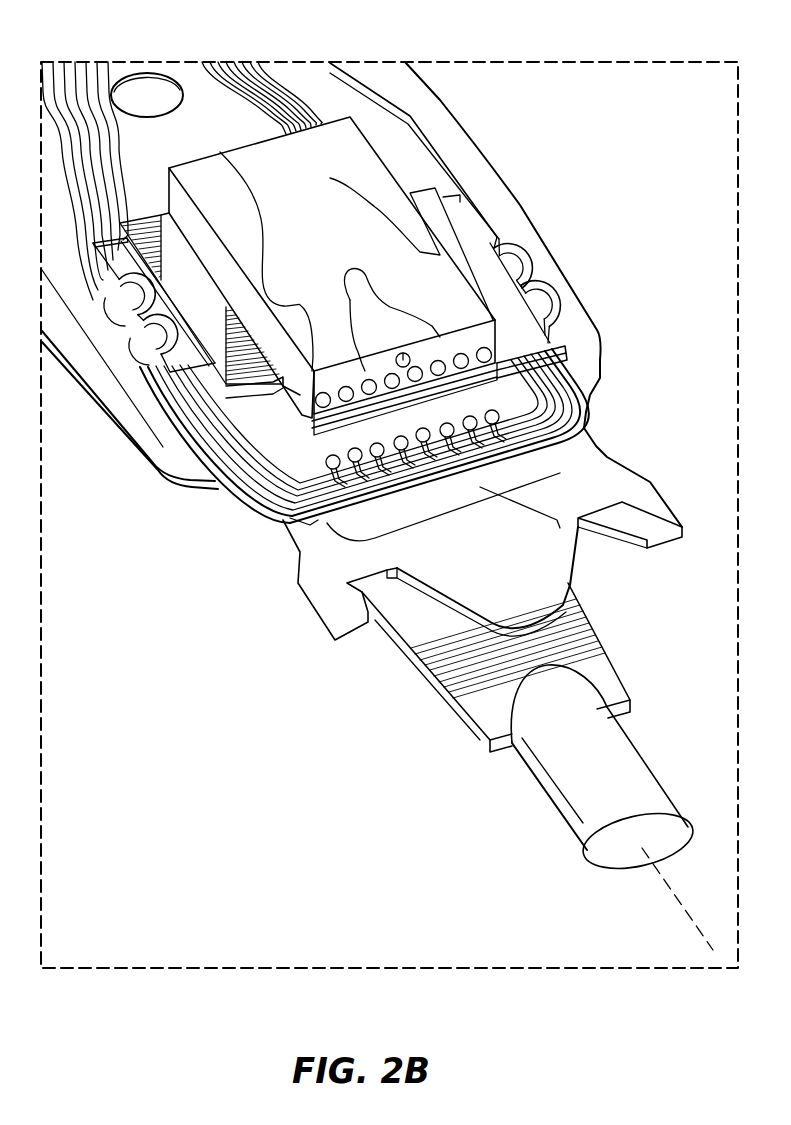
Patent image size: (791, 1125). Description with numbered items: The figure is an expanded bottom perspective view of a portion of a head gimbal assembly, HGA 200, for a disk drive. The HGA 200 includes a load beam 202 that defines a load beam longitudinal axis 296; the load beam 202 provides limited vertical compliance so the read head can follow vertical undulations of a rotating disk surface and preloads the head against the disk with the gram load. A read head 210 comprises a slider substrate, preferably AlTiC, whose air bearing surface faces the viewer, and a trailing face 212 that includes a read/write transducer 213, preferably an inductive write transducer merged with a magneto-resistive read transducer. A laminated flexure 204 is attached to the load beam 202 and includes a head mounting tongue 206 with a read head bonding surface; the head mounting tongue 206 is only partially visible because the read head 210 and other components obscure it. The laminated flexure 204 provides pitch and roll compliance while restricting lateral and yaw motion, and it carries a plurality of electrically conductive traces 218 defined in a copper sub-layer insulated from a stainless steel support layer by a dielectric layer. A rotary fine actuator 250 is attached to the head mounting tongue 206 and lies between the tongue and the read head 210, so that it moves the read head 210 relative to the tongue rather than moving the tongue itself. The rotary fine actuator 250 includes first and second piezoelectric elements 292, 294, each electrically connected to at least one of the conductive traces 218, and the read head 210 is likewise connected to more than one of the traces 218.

The HGA 200 is at (268, 825).
The load beam 202 is at (605, 675).
The laminated flexure 204 is at (102, 78).
The head mounting tongue 206 is at (407, 420).
The read head 210 is at (370, 178).
The trailing face 212 is at (520, 350).
The read/write transducer 213 is at (404, 352).
The electrically conductive traces 218 is at (260, 92).
The rotary fine actuator 250 is at (212, 390).
The first piezoelectric element 292 is at (183, 250).
The second piezoelectric element 294 is at (450, 233).
The load beam longitudinal axis 296 is at (672, 888).